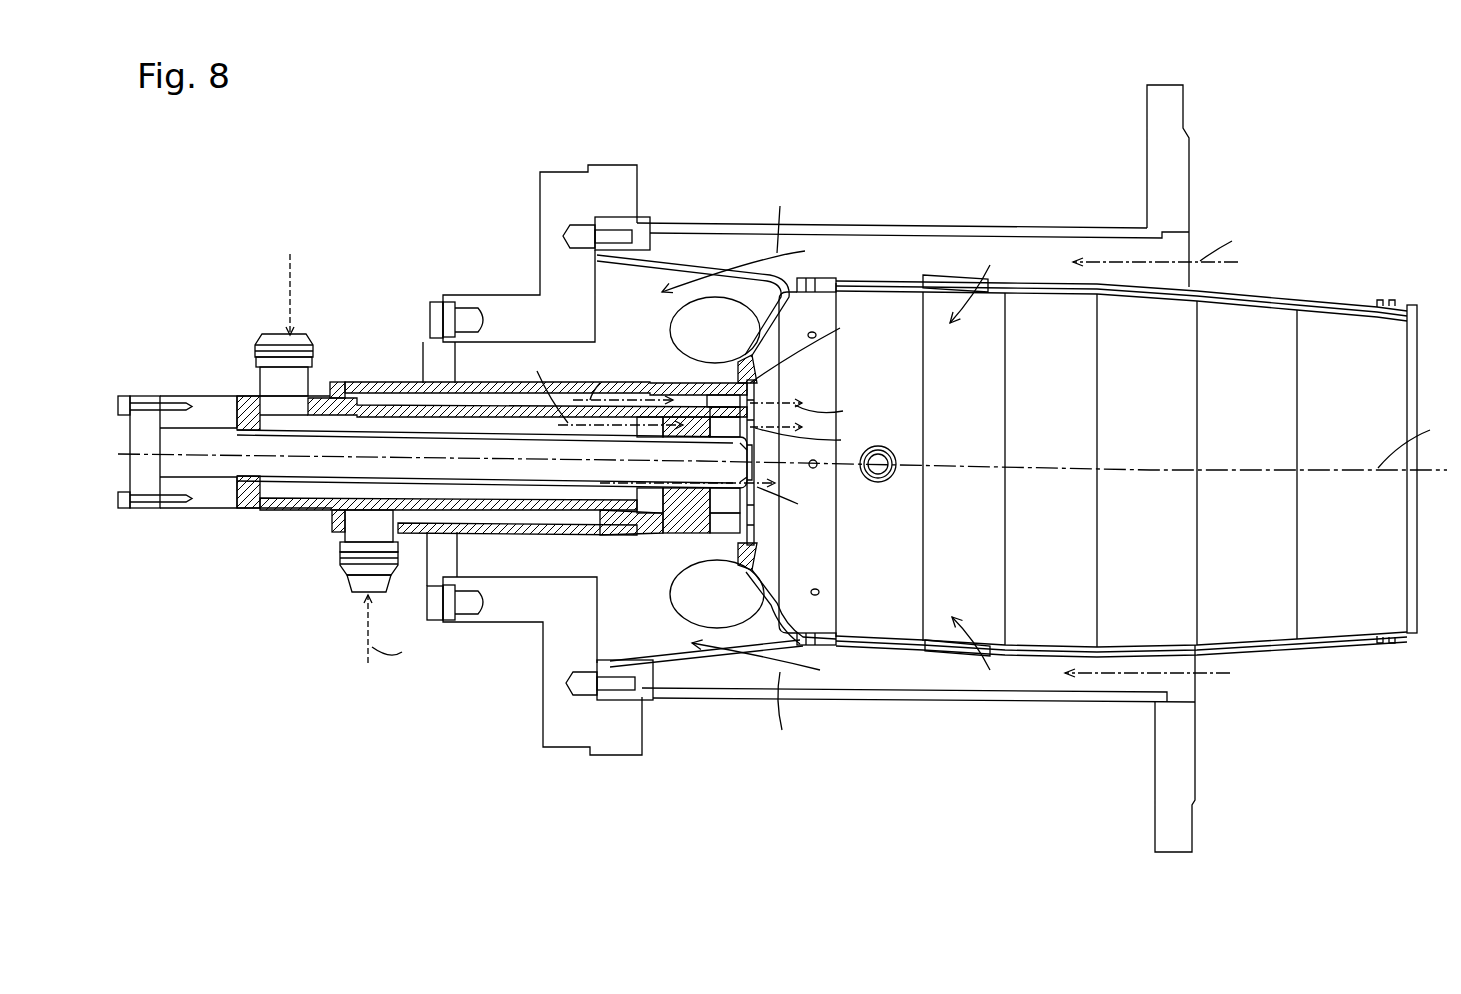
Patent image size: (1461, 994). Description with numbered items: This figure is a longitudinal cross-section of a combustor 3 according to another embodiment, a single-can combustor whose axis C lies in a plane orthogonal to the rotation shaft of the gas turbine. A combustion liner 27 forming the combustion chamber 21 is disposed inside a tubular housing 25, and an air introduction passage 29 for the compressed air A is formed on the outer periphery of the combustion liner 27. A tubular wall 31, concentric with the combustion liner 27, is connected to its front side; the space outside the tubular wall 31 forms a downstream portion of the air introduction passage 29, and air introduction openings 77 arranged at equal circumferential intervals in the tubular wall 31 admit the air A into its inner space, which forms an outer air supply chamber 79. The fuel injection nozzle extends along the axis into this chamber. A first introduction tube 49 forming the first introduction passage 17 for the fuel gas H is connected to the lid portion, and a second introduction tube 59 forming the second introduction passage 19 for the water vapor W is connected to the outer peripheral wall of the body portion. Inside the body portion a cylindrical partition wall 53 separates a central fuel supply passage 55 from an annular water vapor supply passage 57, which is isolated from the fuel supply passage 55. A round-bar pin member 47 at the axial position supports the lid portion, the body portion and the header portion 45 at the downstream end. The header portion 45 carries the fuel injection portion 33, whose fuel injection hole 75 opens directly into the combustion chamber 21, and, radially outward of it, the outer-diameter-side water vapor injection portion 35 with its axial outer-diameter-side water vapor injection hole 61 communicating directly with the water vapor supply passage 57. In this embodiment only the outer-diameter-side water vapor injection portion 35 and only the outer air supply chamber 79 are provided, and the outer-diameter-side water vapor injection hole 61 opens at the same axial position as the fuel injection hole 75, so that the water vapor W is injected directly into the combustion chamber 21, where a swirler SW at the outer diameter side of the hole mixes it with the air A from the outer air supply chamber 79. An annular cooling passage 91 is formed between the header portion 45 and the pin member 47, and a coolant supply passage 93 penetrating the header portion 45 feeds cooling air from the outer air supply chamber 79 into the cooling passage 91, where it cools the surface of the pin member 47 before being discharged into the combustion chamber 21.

The combustor 3 is at (1198, 75).
The first introduction passage 17 is at (252, 357).
The second introduction passage 19 is at (340, 568).
The combustion chamber 21 is at (1062, 526).
The housing 25 is at (1017, 227).
The combustion liner 27 is at (1035, 656).
The air introduction passage 29 is at (902, 694).
The tubular wall 31 is at (660, 250).
The fuel injection portion 33 is at (748, 432).
The outer-diameter-side water vapor injection portion 35 is at (750, 400).
The header portion 45 is at (690, 537).
The pin member 47 is at (272, 463).
The first introduction tube 49 is at (244, 346).
The partition wall 53 is at (396, 395).
The fuel supply passage 55 is at (290, 488).
The water vapor supply passage 57 is at (343, 384).
The second introduction tube 59 is at (335, 589).
The outer-diameter-side water vapor injection hole 61 is at (832, 452).
The fuel injection hole 75 is at (816, 490).
The air introduction openings 77 is at (667, 258).
The outer air supply chamber 79 is at (634, 300).
The cooling passage 91 is at (733, 497).
The coolant supply passage 93 is at (672, 533).